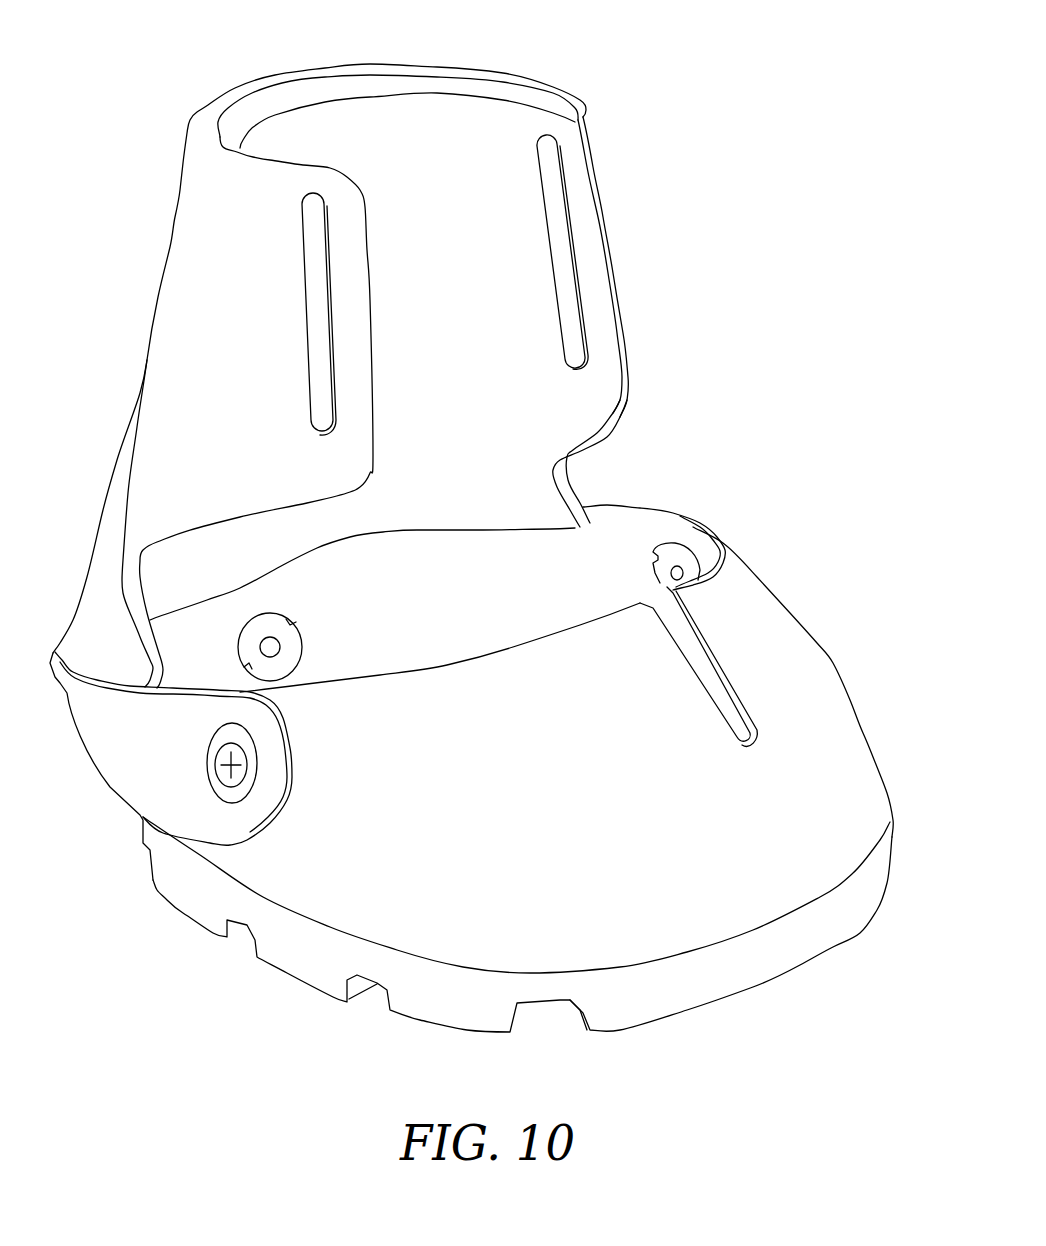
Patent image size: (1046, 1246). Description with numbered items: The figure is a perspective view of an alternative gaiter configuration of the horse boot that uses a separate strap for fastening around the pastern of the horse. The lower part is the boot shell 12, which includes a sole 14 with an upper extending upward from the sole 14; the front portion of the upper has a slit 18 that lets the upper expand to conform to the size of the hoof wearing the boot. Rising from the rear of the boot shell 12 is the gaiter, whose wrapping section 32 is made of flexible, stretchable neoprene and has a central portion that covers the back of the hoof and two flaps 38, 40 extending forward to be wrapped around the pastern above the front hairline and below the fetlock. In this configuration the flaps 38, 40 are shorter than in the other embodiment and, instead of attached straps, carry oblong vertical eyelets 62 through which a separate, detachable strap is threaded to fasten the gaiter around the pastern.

The boot shell 12 is at (841, 653).
The sole 14 is at (837, 943).
The slit 18 is at (693, 672).
The wrapping section 32 is at (408, 130).
The flap 38 is at (357, 467).
The flap 40 is at (593, 426).
The oblong vertical eyelets 62 is at (317, 393).